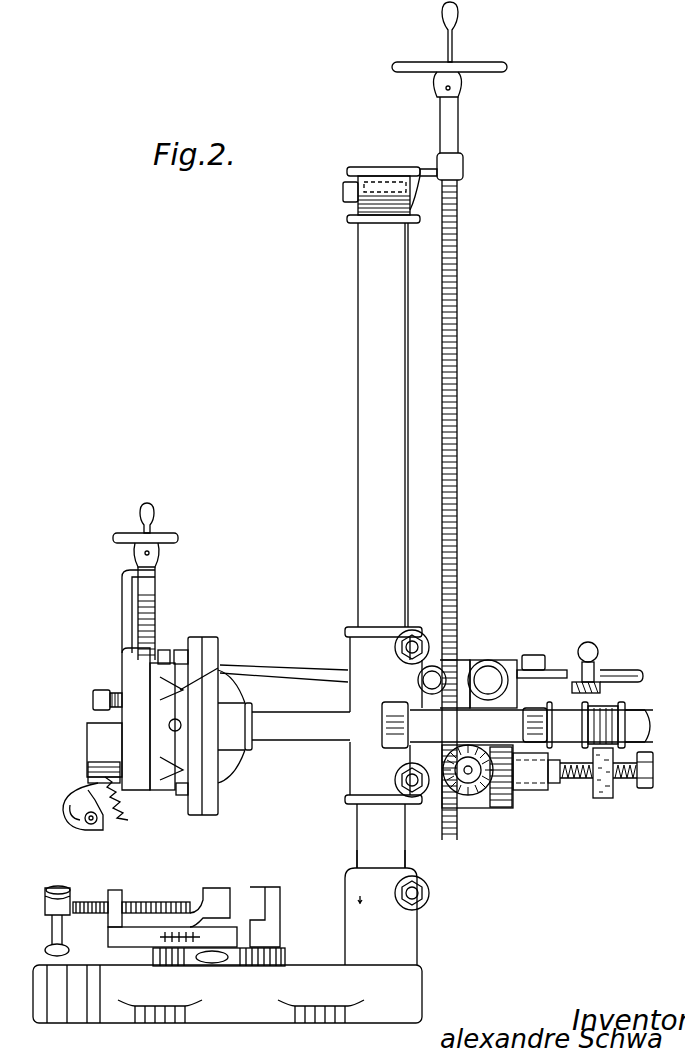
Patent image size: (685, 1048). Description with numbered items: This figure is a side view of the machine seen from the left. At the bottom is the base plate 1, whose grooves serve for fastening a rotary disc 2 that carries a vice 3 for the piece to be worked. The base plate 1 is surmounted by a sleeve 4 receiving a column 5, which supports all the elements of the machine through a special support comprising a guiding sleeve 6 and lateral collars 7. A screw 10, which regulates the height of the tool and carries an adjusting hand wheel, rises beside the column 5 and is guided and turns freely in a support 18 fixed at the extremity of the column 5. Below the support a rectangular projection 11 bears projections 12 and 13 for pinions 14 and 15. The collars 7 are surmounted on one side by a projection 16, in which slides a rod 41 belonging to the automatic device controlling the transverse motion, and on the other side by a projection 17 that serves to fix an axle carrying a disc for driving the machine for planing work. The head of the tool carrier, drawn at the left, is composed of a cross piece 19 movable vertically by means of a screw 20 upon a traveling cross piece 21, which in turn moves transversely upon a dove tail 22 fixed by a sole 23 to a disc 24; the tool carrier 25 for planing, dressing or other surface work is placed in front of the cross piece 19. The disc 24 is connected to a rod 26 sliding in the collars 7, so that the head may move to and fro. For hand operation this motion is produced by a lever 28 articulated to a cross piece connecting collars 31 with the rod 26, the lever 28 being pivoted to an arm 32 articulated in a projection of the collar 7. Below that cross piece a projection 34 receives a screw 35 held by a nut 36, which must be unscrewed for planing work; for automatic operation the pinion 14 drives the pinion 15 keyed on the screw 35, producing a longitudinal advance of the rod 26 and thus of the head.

The base plate 1 is at (245, 1010).
The rotary disc 2 is at (286, 955).
The vice 3 is at (233, 893).
The sleeve 4 is at (410, 935).
The column 5 is at (358, 430).
The guiding sleeve 6 is at (355, 650).
The lateral collars 7 is at (360, 765).
The screw 10 is at (460, 478).
The rectangular projection 11 is at (518, 790).
The projection 12 is at (445, 795).
The projection 13 is at (538, 783).
The pinion 14 is at (468, 796).
The pinion 15 is at (500, 800).
The projection 16 is at (452, 645).
The projection 17 is at (496, 670).
The support 18 is at (383, 180).
The cross piece 19 is at (128, 678).
The screw 20 is at (157, 612).
The traveling cross piece 21 is at (162, 790).
The dove tail 22 is at (218, 668).
The sole 23 is at (205, 815).
The disc 24 is at (218, 800).
The tool carrier 25 is at (95, 766).
The rod 26 is at (278, 718).
The lever 28 is at (580, 682).
The collars 31 is at (630, 710).
The arm 32 is at (615, 672).
The projection 34 is at (606, 798).
The screw 35 is at (578, 780).
The nut 36 is at (646, 788).
The rod 41 is at (276, 668).